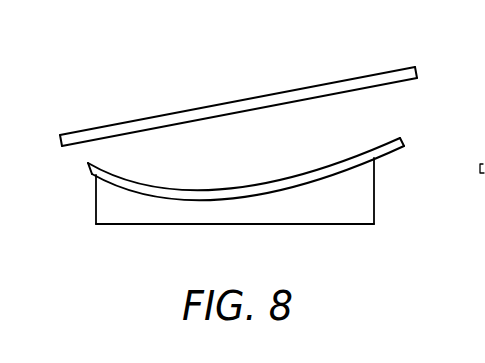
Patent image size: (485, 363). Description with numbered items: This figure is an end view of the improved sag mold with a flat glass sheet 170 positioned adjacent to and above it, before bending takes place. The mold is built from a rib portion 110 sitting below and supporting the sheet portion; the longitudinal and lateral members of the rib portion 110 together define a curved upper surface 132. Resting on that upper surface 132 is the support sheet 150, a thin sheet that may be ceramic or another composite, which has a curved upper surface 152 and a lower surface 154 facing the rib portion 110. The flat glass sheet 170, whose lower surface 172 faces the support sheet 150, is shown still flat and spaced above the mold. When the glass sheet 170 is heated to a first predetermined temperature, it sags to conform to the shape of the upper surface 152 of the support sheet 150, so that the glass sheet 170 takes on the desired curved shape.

The rib portion 110 is at (270, 222).
The upper surface 132 is at (330, 178).
The support sheet 150 is at (249, 145).
The upper surface 152 is at (386, 139).
The lower surface 154 is at (394, 149).
The flat glass sheet 170 is at (257, 81).
The lower surface 172 is at (276, 105).